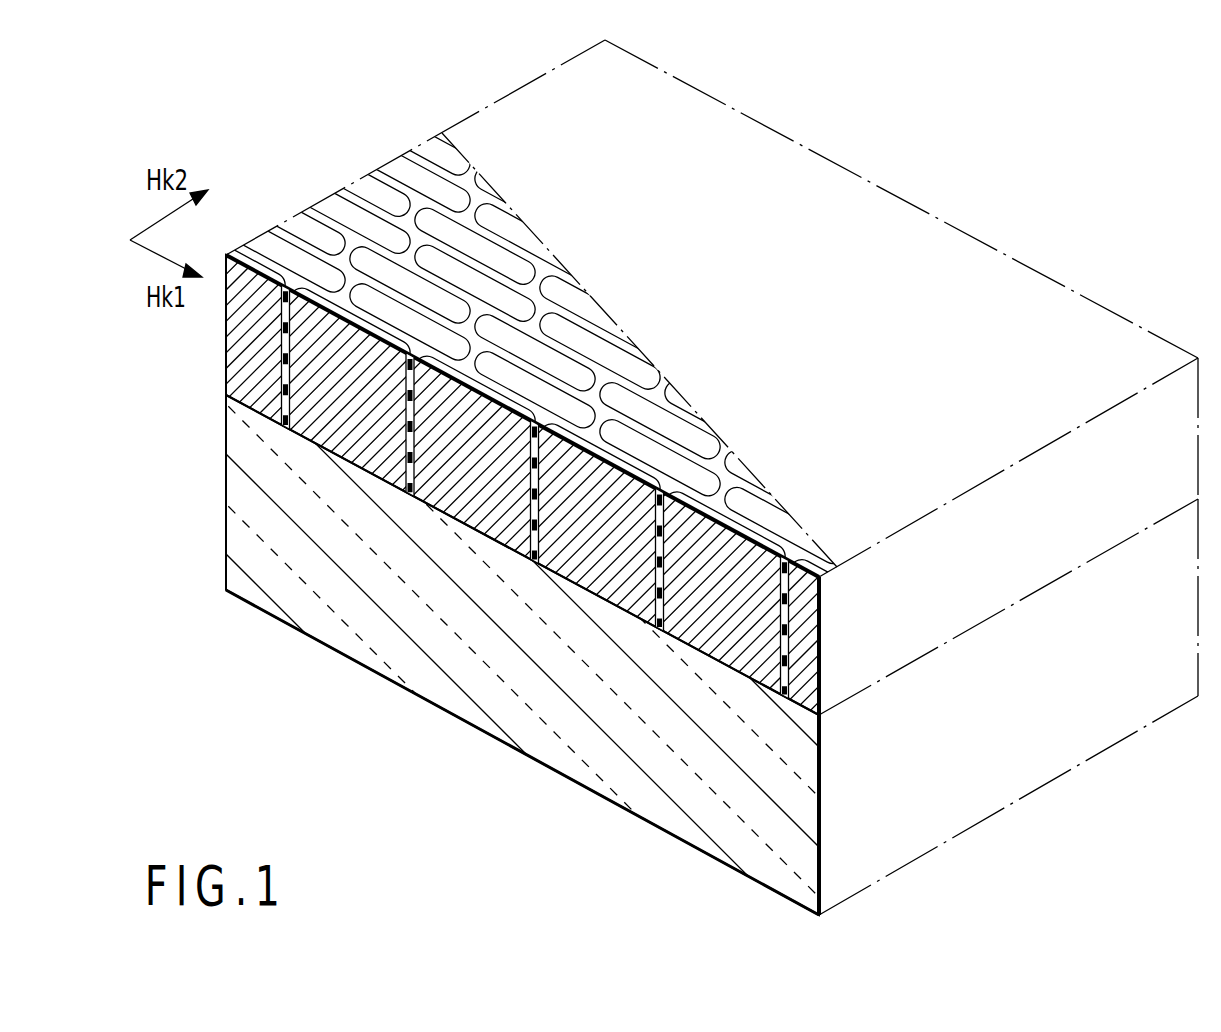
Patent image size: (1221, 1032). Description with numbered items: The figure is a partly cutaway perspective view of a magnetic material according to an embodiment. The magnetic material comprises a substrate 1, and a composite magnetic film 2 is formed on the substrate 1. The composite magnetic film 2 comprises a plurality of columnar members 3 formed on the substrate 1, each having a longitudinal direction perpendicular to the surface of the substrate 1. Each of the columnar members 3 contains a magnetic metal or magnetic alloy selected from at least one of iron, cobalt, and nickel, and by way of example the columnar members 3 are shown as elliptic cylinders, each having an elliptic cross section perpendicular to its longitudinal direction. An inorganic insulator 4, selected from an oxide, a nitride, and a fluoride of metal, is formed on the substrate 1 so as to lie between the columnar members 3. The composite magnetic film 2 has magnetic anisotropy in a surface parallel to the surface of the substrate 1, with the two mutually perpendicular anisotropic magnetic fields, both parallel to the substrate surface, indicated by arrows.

The substrate 1 is at (228, 553).
The composite magnetic film 2 is at (316, 172).
The columnar members 3 is at (405, 167).
The inorganic insulator 4 is at (281, 385).